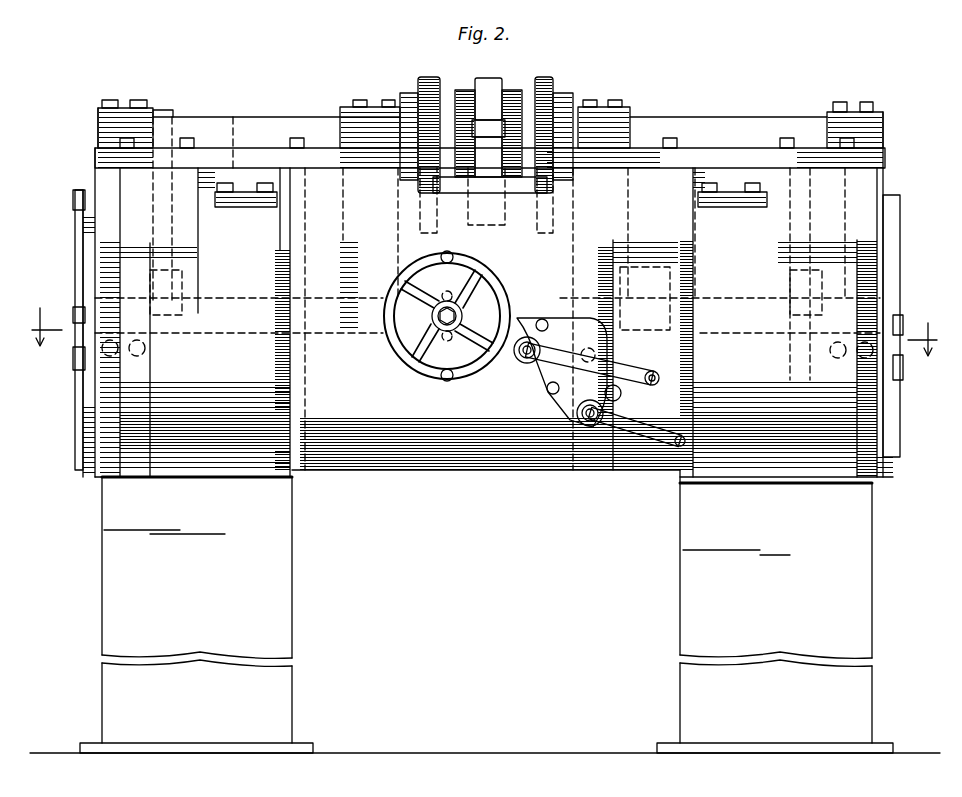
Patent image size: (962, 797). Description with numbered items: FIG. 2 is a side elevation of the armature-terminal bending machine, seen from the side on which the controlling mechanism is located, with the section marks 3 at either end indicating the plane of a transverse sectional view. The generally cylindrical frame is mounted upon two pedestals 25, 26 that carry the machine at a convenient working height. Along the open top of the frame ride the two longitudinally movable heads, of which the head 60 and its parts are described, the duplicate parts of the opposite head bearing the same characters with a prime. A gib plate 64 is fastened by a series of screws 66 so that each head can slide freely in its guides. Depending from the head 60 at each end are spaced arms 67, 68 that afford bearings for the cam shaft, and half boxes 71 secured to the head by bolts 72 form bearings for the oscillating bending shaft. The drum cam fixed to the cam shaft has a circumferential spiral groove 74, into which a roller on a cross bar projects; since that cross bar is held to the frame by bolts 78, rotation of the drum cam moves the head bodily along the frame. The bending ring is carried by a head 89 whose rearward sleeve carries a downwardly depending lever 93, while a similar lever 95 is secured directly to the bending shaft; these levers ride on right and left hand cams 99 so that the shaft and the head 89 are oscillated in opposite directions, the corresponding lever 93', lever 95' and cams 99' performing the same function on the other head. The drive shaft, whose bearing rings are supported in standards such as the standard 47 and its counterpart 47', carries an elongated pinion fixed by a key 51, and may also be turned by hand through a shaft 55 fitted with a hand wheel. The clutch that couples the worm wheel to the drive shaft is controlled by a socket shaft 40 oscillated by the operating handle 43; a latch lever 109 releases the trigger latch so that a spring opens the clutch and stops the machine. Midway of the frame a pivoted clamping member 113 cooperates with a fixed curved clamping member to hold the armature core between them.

The section line 3- 3 is at (483, 332).
The pedestal 25 is at (293, 530).
The pedestal 26 is at (680, 545).
The socket shaft 40 is at (522, 362).
The operating handle 43 is at (560, 383).
The standard 47 is at (732, 225).
The standard 47' is at (255, 147).
The key 51 is at (422, 373).
The shaft 55 is at (462, 313).
The head 60 is at (363, 117).
The gib plate 64 is at (883, 160).
The screws 66 is at (676, 140).
The arm 67 is at (582, 252).
The arm 68 is at (903, 268).
The half boxes 71 is at (592, 115).
The bolts 72 is at (623, 102).
The spiral groove 74 is at (262, 210).
The bolts 78 is at (752, 183).
The head 89 is at (546, 80).
The lever 93 is at (610, 215).
The lever 93' is at (365, 215).
The lever 95 is at (842, 208).
The lever 95' is at (213, 228).
The cams 99 is at (839, 364).
The cams 99' is at (137, 358).
The latch lever 109 is at (660, 445).
The clamping member 113 is at (499, 88).